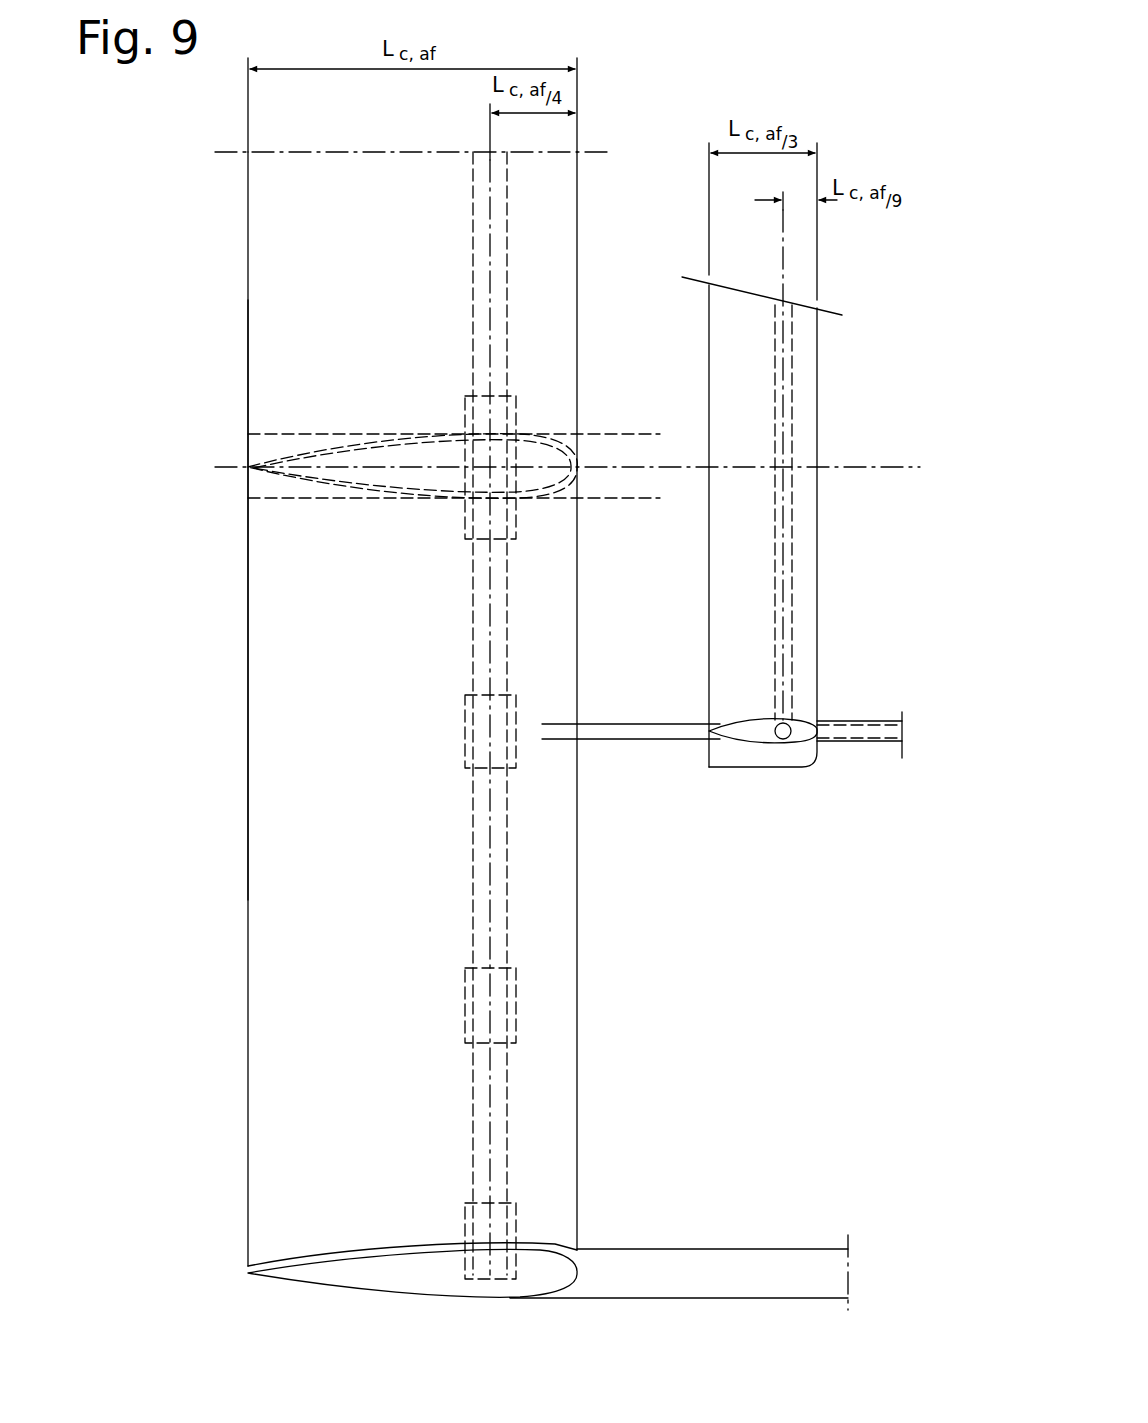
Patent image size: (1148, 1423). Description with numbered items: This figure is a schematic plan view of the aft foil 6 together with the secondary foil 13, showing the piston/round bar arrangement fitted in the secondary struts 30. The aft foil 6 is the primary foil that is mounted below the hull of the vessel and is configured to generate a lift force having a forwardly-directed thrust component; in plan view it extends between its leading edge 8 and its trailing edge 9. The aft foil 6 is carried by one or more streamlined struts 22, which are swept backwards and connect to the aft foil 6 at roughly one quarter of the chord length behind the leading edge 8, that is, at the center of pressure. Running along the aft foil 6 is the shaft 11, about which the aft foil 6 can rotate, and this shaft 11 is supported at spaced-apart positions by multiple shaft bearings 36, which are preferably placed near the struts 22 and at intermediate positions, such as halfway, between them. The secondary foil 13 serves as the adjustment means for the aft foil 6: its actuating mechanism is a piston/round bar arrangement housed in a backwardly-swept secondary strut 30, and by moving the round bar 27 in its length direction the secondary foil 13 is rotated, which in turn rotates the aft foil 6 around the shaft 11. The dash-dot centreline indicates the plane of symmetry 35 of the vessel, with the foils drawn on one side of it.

The aft foil 6 is at (248, 975).
The leading edge 8 is at (577, 875).
The trailing edge 9 is at (248, 858).
The shaft 11 is at (495, 1145).
The secondary foil 13 is at (817, 583).
The strut 22 is at (305, 472).
The round bar 27 is at (853, 718).
The secondary strut 30 is at (873, 741).
The plane of symmetry 35 is at (872, 468).
The shaft bearing 36 is at (512, 1020).